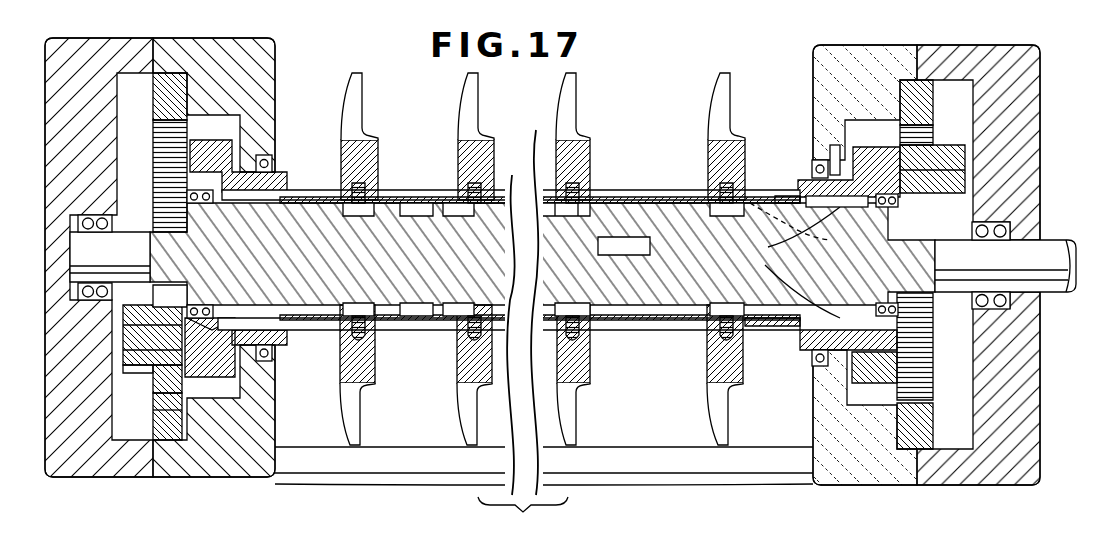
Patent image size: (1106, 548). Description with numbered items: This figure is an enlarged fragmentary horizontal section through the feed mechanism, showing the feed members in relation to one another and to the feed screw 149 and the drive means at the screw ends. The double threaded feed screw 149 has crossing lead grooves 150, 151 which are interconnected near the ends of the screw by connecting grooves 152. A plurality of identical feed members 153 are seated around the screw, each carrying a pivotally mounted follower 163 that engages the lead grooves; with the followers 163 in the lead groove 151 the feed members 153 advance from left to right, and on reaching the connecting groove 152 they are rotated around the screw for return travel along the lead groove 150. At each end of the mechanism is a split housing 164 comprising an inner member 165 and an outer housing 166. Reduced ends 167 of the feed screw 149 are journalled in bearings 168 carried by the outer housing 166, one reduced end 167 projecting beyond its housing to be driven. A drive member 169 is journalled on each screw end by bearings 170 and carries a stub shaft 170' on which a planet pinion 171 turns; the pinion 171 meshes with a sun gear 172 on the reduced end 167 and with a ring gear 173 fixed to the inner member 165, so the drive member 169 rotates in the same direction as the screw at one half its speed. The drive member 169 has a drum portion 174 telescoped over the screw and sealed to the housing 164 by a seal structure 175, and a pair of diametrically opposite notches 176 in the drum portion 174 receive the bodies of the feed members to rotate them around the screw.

The feed screw 149 is at (788, 205).
The lead groove 150 is at (604, 325).
The lead groove 151 is at (608, 192).
The connecting groove 152 is at (542, 254).
The feed member 153 is at (382, 156).
The follower 163 is at (758, 203).
The split housing 164 is at (155, 480).
The inner member 165 is at (236, 470).
The outer housing 166 is at (56, 160).
The reduced end 167 is at (122, 240).
The bearing 168 is at (86, 300).
The drive member 169 is at (212, 152).
The bearing 170 is at (562, 297).
The stub shaft 170' is at (490, 251).
The planet pinion 171 is at (150, 370).
The sun gear 172 is at (158, 288).
The ring gear 173 is at (152, 398).
The drum portion 174 is at (258, 336).
The seal structure 175 is at (268, 162).
The notch 176 is at (324, 336).